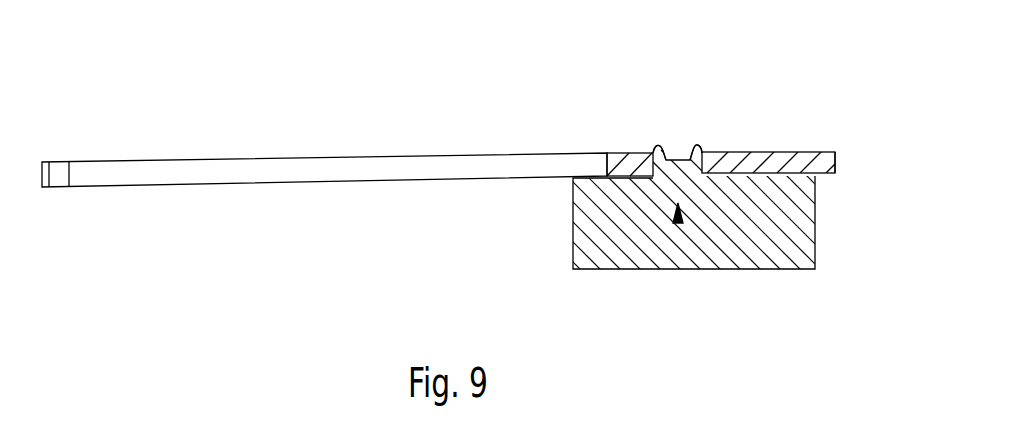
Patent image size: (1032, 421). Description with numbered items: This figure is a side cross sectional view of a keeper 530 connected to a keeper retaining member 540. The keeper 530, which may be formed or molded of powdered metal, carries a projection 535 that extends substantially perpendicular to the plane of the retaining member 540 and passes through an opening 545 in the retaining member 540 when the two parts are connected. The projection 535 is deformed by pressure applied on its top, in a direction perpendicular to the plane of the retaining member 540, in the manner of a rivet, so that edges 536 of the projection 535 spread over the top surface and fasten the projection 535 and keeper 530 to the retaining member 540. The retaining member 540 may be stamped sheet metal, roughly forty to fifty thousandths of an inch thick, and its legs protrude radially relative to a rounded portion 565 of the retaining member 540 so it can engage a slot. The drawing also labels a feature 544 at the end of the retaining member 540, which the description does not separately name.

The rounded portion 565 is at (178, 160).
The keeper 530 is at (815, 227).
The projection 535 is at (672, 156).
The edges 536 is at (652, 146).
The keeper retaining member 540 is at (768, 150).
The plate end edge 544 is at (835, 163).
The opening 545 is at (678, 222).